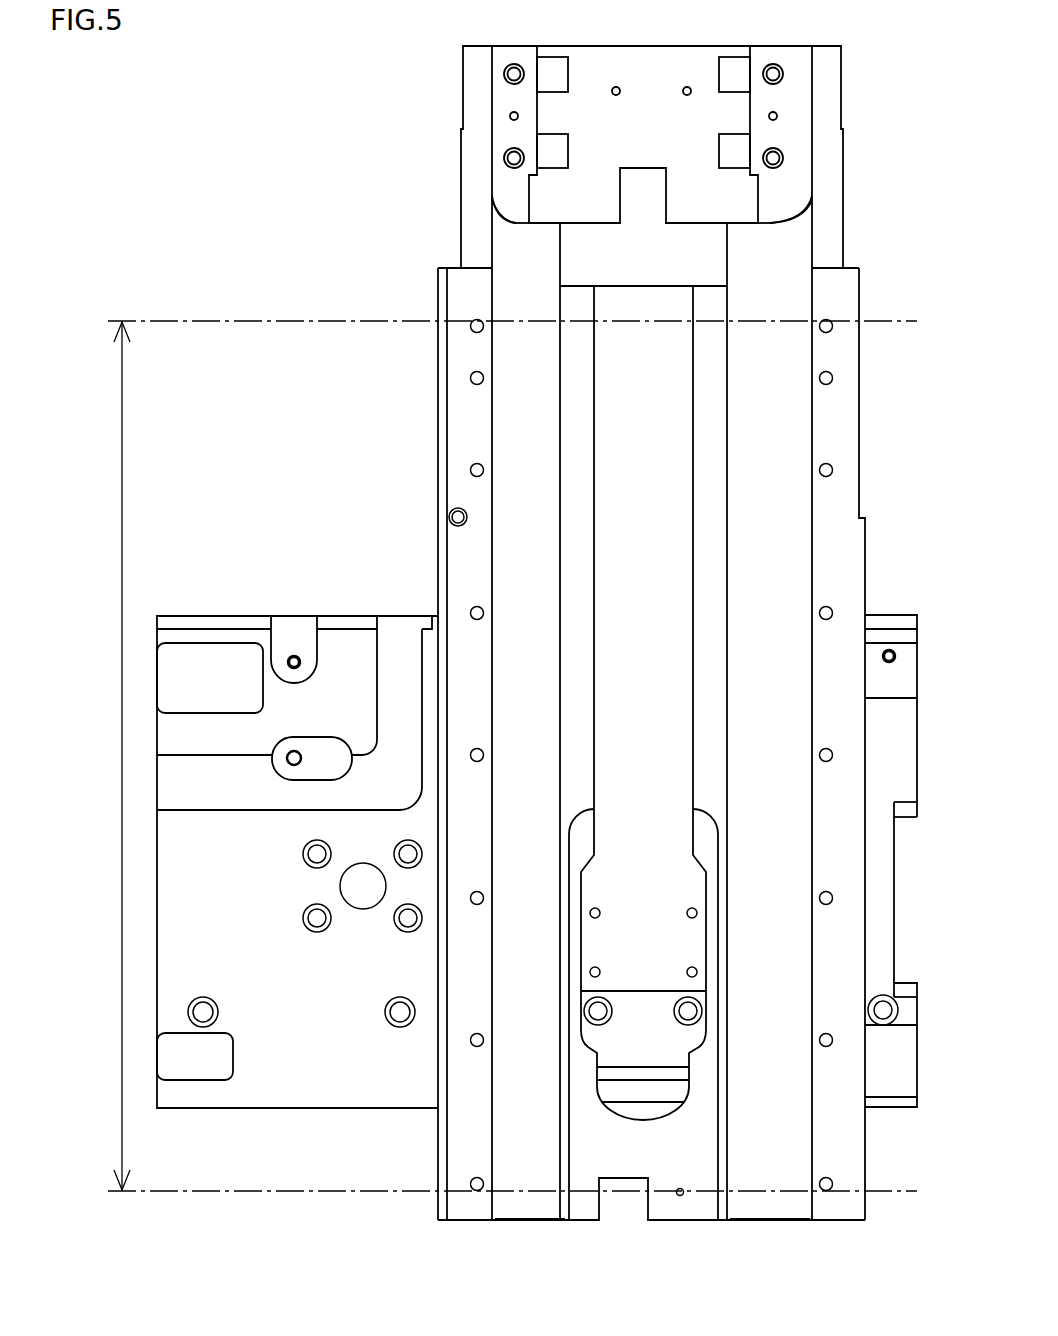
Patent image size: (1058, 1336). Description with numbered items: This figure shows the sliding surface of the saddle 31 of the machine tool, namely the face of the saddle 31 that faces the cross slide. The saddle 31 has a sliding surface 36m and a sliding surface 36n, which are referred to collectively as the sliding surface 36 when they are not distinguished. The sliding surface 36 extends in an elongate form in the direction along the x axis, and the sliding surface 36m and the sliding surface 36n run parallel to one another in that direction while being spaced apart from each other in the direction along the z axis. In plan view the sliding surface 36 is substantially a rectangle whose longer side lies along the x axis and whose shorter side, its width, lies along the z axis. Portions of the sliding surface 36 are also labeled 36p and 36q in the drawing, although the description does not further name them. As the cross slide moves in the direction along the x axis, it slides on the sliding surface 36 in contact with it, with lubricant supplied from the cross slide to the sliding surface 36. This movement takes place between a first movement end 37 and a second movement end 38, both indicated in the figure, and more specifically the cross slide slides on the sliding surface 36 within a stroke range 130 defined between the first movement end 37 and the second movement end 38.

The saddle 31 is at (372, 87).
The sliding surface 36 is at (633, 721).
The sliding surface 36m is at (527, 402).
The sliding surface 36n is at (770, 404).
The fillet portion of guide rail 36p is at (492, 200).
The end portion of guide rail 36q is at (527, 1221).
The first movement end 37 is at (885, 320).
The second movement end 38 is at (891, 1191).
The stroke range 130 is at (122, 757).